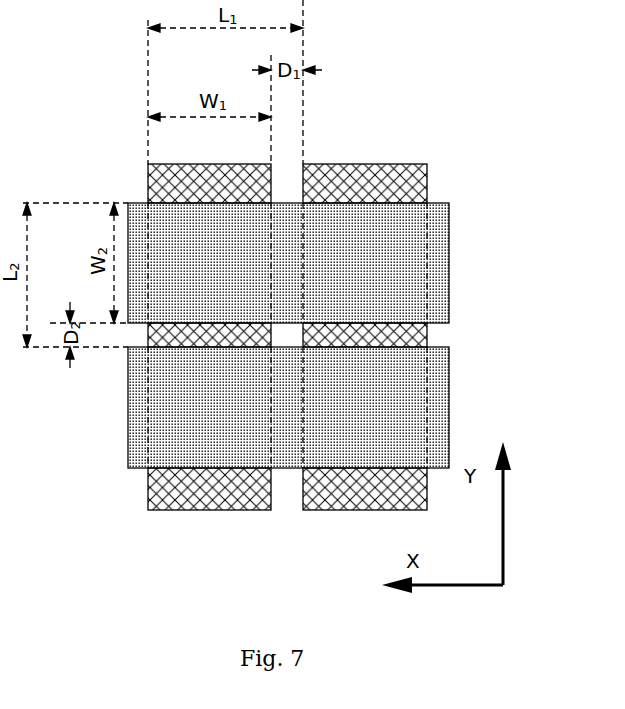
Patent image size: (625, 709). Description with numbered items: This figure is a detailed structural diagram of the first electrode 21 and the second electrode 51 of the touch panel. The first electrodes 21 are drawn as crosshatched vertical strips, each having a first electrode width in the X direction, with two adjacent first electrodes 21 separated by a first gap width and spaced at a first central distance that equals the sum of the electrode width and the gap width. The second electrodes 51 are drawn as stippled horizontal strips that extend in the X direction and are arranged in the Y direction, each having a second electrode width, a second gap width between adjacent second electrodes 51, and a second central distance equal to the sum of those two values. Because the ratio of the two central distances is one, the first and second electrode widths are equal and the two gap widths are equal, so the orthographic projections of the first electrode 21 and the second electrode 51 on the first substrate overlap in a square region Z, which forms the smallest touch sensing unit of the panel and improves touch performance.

The first electrode 21 is at (352, 186).
The second electrode 51 is at (440, 272).
The square overlapped region Z is at (210, 397).